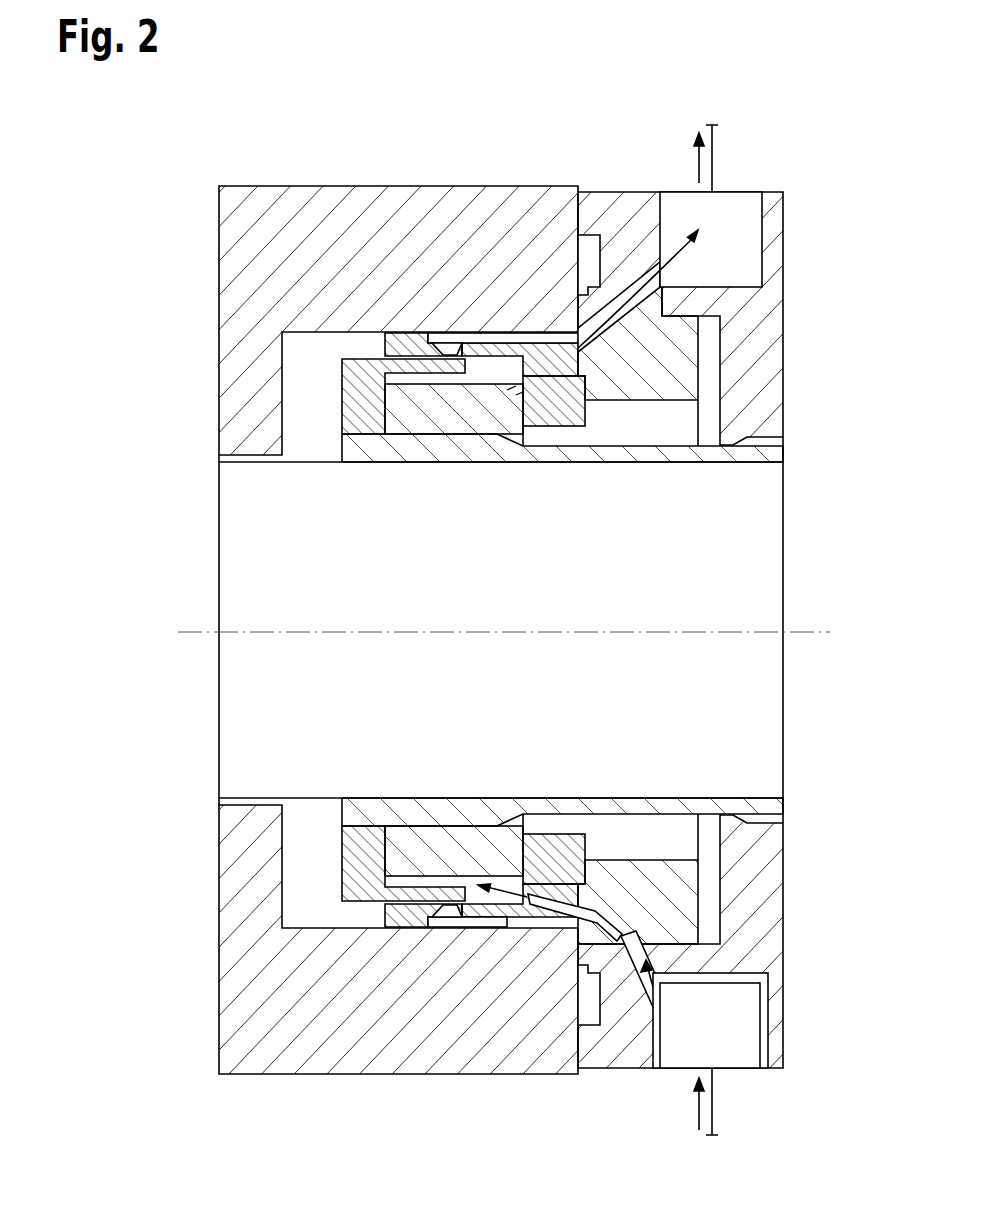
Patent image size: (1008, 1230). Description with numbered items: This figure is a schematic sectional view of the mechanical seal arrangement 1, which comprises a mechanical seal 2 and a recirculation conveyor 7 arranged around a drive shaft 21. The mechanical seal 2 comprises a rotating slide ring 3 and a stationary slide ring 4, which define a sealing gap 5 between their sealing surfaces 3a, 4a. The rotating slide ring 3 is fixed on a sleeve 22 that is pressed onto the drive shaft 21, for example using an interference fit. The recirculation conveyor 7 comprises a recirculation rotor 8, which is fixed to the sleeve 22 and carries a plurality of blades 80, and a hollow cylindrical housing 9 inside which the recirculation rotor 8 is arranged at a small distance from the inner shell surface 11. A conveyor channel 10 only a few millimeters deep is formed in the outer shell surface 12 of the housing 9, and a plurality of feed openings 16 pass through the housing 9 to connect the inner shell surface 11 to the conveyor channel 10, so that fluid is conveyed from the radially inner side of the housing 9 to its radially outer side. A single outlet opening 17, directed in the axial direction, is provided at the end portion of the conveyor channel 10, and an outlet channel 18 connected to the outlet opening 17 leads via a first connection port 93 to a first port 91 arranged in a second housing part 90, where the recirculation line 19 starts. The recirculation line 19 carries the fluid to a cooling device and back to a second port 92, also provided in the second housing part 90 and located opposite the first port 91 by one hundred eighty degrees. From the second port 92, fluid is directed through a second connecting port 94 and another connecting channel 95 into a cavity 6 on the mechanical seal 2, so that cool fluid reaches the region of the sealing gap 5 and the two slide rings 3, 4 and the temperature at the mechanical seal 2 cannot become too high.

The mechanical seal arrangement 1 is at (211, 149).
The mechanical seal 2 is at (513, 366).
The rotating slide ring 3 is at (473, 843).
The sealing surface 3a is at (537, 398).
The stationary slide ring 4 is at (567, 847).
The sealing surface 4a is at (513, 390).
The sealing gap 5 is at (527, 852).
The cavity 6 is at (520, 903).
The recirculation conveyor 7 is at (388, 327).
The recirculation rotor 8 is at (422, 371).
The hollow cylindrical housing 9 is at (410, 340).
The conveyor channel 10 is at (489, 337).
The inner shell surface 11 is at (493, 898).
The outer shell surface 12 is at (400, 930).
The feed openings 16 is at (447, 350).
The outlet opening 17 is at (590, 305).
The outlet channel 18 is at (618, 300).
The recirculation line 19 is at (712, 150).
The drive shaft 21 is at (728, 545).
The sleeve 22 is at (573, 453).
The blades 80 is at (449, 368).
The second housing part 90 is at (770, 357).
The first port 91 is at (740, 228).
The second port 92 is at (745, 1035).
The first connection port 93 is at (705, 305).
The second connecting port 94 is at (640, 957).
The connecting channel 95 is at (590, 910).